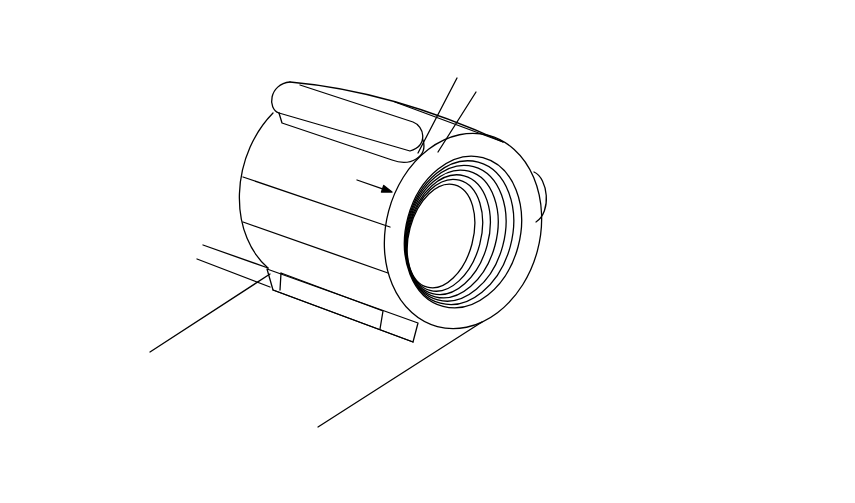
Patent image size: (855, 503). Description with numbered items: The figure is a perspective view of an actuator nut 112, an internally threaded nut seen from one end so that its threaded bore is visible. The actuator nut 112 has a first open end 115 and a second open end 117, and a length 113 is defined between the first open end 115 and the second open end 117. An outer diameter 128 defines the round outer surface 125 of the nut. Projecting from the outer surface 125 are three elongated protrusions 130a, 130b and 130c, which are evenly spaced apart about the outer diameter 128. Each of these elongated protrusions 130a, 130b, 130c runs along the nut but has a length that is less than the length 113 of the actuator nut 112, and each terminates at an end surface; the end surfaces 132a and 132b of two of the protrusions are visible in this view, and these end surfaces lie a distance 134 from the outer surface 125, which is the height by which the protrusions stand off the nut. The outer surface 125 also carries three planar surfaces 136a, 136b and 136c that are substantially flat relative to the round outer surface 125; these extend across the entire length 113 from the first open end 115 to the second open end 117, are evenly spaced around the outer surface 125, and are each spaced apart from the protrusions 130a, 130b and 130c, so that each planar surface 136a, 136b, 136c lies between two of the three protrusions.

The actuator nut 112 is at (512, 37).
The length 113 is at (318, 410).
The first open end 115 is at (523, 173).
The second open end 117 is at (258, 152).
The outer surface 125 is at (260, 162).
The outer diameter 128 is at (540, 267).
The elongated protrusion 130a is at (335, 97).
The elongated protrusion 130b is at (364, 334).
The elongated protrusion 130c is at (552, 213).
The end surface 132a is at (387, 87).
The end surface 132b is at (342, 329).
The distance 134 is at (500, 143).
The planar surface 136a is at (254, 201).
The planar surface 136b is at (496, 305).
The planar surface 136c is at (497, 148).